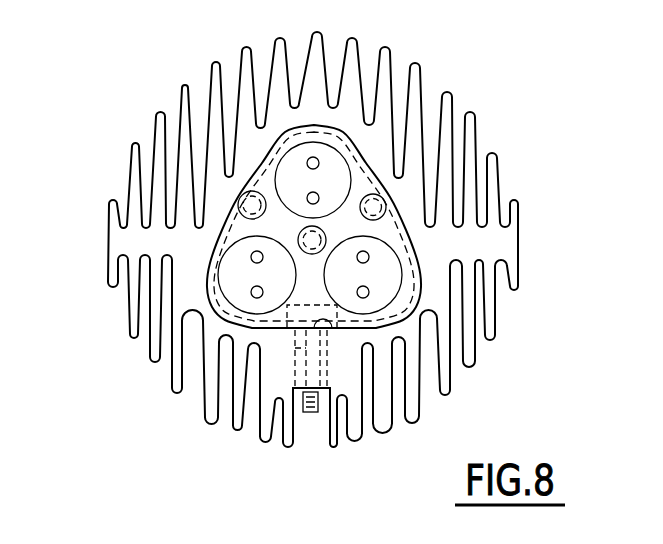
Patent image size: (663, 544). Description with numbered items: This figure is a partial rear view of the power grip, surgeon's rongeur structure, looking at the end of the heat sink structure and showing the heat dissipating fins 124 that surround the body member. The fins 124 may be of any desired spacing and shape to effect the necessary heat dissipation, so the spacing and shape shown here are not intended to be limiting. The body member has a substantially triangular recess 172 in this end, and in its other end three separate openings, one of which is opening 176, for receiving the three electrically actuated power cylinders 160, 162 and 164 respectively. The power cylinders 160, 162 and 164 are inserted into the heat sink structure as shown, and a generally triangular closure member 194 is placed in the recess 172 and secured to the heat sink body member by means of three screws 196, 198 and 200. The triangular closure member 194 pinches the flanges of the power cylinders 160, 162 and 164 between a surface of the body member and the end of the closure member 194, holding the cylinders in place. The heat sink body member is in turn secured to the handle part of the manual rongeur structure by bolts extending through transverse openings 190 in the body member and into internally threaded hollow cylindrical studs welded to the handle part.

The heat sink fins 124 is at (416, 60).
The opening 176 is at (232, 302).
The triangular closure member 194 is at (293, 125).
The electrically actuated power cylinder 164 is at (335, 167).
The electrically actuated power cylinder 160 is at (218, 283).
The electrically actuated power cylinder 162 is at (398, 280).
The screw 196 is at (240, 200).
The screw 198 is at (395, 195).
The screw 200 is at (298, 237).
The triangular recess 172 is at (336, 330).
The transverse opening 190 is at (308, 343).